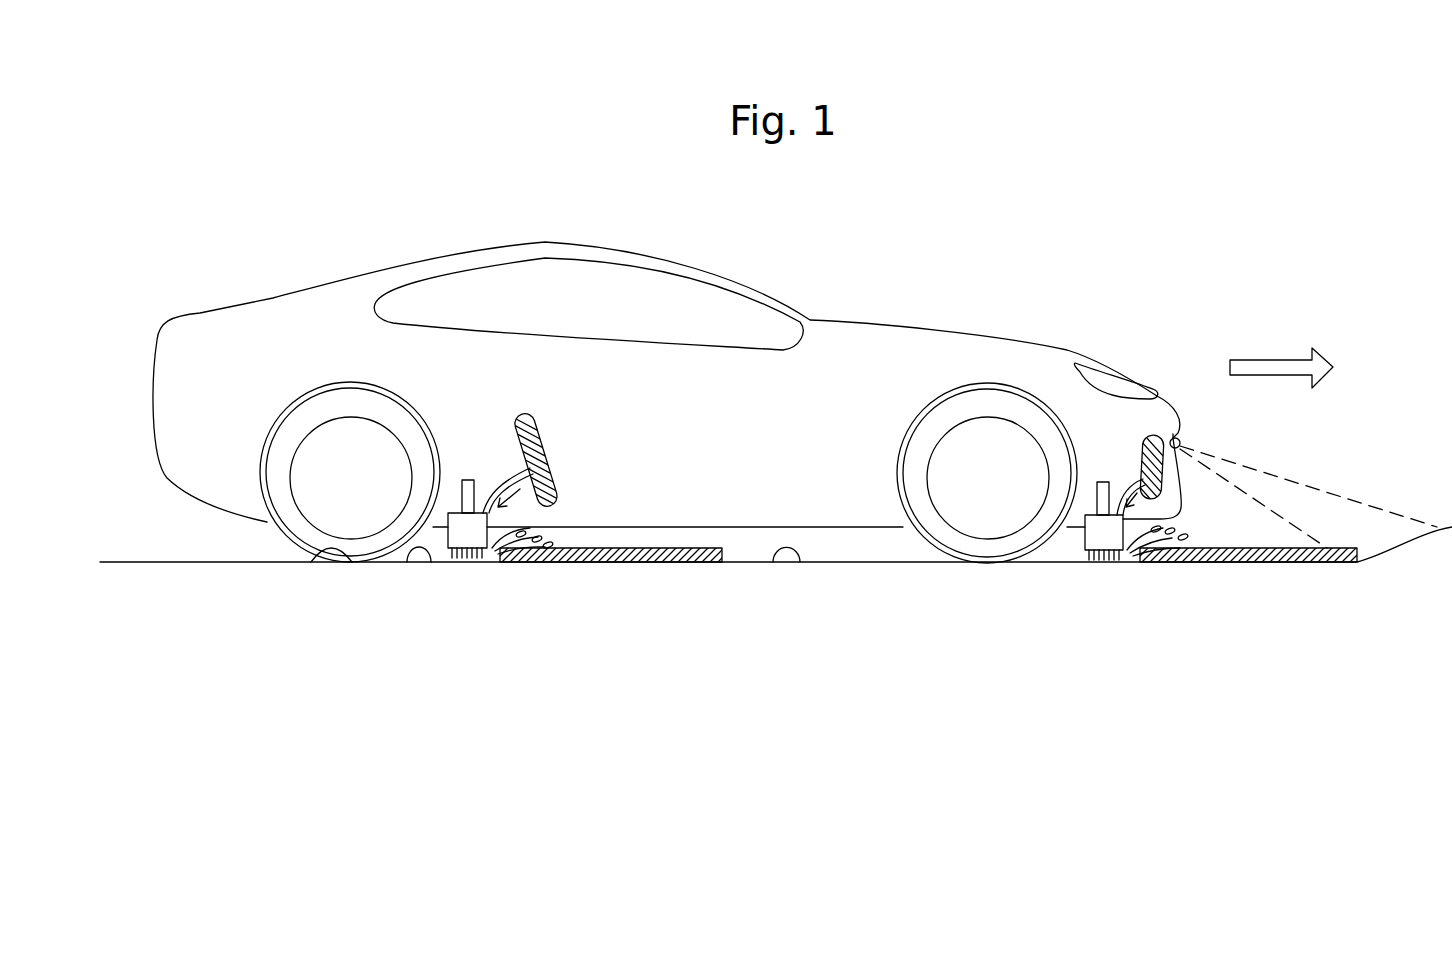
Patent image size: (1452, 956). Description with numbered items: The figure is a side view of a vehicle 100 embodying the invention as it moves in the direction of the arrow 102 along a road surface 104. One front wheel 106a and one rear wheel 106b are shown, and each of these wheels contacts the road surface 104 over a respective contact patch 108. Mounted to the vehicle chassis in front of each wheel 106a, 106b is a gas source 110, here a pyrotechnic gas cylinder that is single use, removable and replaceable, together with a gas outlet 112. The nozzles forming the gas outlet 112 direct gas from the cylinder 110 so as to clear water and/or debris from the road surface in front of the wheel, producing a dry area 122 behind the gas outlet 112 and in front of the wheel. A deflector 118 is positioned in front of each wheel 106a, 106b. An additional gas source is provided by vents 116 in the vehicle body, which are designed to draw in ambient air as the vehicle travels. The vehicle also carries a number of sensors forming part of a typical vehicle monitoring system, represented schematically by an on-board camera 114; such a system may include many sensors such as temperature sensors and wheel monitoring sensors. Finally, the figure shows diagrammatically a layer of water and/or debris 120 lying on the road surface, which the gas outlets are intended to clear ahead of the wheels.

The vehicle 100 is at (690, 268).
The arrow 102 is at (1277, 362).
The road surface 104 is at (790, 555).
The front wheel 106a is at (944, 537).
The rear wheel 106b is at (326, 445).
The contact patch 108 is at (313, 560).
The gas source 110 is at (465, 478).
The gas outlet 112 is at (470, 550).
The on-board camera 114 is at (1176, 433).
The vent 116 is at (538, 441).
The deflector 118 is at (478, 538).
The layer of water and/or debris 120 is at (675, 553).
The dry area 122 is at (417, 549).